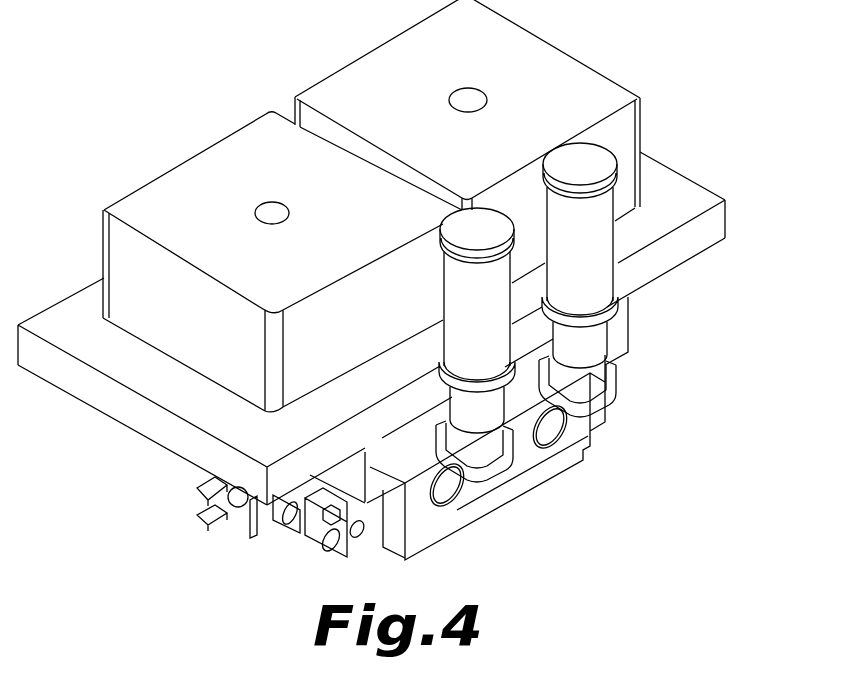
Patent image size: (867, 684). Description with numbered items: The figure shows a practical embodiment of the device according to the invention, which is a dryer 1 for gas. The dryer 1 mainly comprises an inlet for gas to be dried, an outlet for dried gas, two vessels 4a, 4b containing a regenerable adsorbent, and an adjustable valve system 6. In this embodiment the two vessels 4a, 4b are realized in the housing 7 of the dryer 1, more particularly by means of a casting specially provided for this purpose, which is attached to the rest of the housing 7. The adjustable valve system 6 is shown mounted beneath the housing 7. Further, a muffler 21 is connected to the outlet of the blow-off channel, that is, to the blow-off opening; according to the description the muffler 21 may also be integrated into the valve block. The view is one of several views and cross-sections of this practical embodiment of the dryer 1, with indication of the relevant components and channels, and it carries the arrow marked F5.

The dryer 1 is at (383, 285).
The vessel 4a is at (172, 190).
The vessel 4b is at (393, 88).
The adjustable valve system 6 is at (515, 520).
The housing 7 is at (143, 417).
The muffler 21 is at (493, 343).
The force direction F5 is at (703, 353).